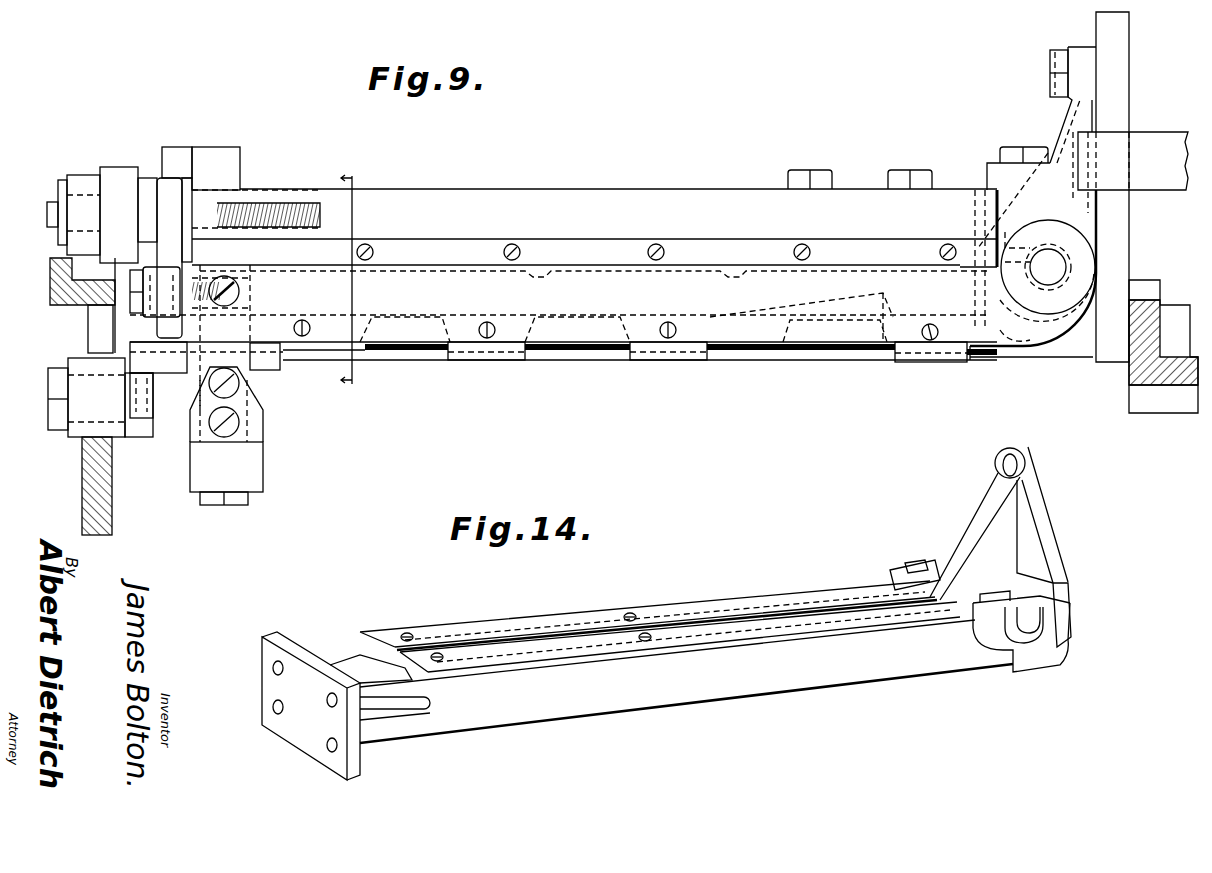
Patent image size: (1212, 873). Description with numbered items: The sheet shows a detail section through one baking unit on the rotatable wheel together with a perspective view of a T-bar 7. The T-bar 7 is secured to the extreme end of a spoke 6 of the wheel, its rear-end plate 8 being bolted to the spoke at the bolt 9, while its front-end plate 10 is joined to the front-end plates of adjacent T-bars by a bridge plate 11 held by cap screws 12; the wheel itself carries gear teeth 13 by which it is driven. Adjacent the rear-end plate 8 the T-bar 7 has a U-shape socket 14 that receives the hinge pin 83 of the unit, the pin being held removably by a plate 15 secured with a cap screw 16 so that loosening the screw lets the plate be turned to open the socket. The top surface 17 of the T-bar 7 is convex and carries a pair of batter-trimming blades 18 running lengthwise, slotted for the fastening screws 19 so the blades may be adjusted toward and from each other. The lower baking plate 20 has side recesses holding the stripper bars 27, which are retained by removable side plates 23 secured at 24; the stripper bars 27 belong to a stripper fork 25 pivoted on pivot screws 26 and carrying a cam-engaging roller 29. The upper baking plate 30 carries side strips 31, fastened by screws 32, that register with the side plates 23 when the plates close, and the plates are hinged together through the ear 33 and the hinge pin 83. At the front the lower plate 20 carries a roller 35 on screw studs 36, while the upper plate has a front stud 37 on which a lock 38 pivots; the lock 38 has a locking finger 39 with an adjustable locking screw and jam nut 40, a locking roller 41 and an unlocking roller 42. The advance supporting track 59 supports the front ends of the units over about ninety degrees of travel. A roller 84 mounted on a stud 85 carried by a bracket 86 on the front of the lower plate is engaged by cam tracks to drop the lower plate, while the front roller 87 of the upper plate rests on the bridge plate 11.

In FIG. 9, the spoke 6 is at (1117, 40).
In FIG. 9, the T-bar 7 is at (986, 350).
In FIG. 14, the T-bar 7 is at (740, 683).
In FIG. 9, the rear-end plate 8 is at (1080, 134).
In FIG. 14, the rear-end plate 8 is at (985, 515).
In FIG. 9, the bolt 9 is at (1050, 60).
In FIG. 9, the front-end plate 10 is at (125, 322).
In FIG. 14, the front-end plate 10 is at (290, 640).
In FIG. 9, the bridge plate 11 is at (50, 292).
In FIG. 9, the cap screw 12 is at (1087, 161).
In FIG. 9, the gear teeth 13 is at (1148, 396).
In FIG. 9, the U-shape socket 14 is at (1027, 352).
In FIG. 14, the U-shape socket 14 is at (1035, 650).
In FIG. 9, the plate 15 is at (1100, 222).
In FIG. 14, the plate 15 is at (1050, 607).
In FIG. 9, the cap screw 16 is at (1009, 260).
In FIG. 14, the cap screw 16 is at (1020, 590).
In FIG. 14, the top surface 17 is at (675, 612).
In FIG. 14, the batter-trimming blade 18 is at (483, 624).
In FIG. 14, the fastening screw 19 is at (408, 632).
In FIG. 9, the lower baking plate 20 is at (622, 360).
In FIG. 9, the side plate 23 is at (605, 300).
In FIG. 9, the fastening 24 is at (486, 340).
In FIG. 9, the stripper fork 25 is at (264, 415).
In FIG. 9, the pivot screw 26 is at (244, 296).
In FIG. 9, the stripper bar 27 is at (826, 312).
In FIG. 9, the stripper operating cam engaging roller 29 is at (250, 470).
In FIG. 9, the upper baking plate 30 is at (738, 196).
In FIG. 9, the side strip 31 is at (731, 250).
In FIG. 9, the screw 32 is at (506, 250).
In FIG. 9, the ear 33 is at (1090, 262).
In FIG. 9, the roller 35 is at (232, 273).
In FIG. 9, the screw stud 36 is at (128, 284).
In FIG. 9, the front stud 37 is at (47, 232).
In FIG. 9, the lock 38 is at (183, 186).
In FIG. 9, the locking finger 39 is at (161, 292).
In FIG. 9, the locking screw and jam nut 40 is at (154, 398).
In FIG. 9, the locking roller 41 is at (115, 172).
In FIG. 9, the unlocking roller 42 is at (228, 160).
In FIG. 9, the advance supporting track 59 is at (84, 518).
In FIG. 9, the hinge pin 83 is at (1045, 272).
In FIG. 9, the roller 84 is at (90, 405).
In FIG. 9, the stud 85 is at (47, 420).
In FIG. 9, the bracket 86 is at (140, 432).
In FIG. 9, the front roller 87 is at (76, 176).